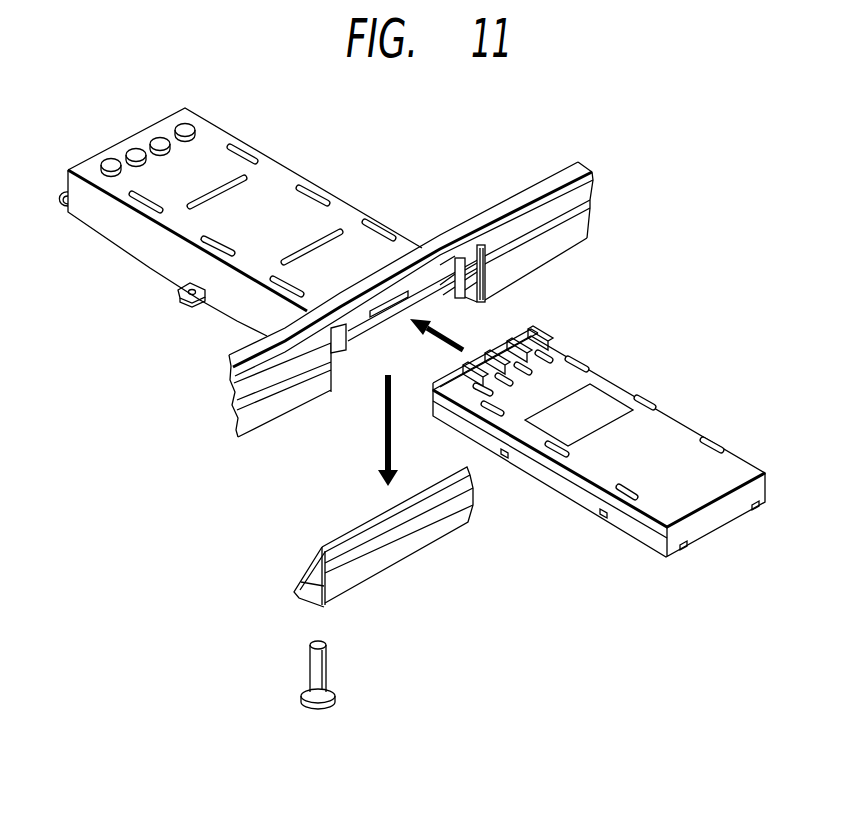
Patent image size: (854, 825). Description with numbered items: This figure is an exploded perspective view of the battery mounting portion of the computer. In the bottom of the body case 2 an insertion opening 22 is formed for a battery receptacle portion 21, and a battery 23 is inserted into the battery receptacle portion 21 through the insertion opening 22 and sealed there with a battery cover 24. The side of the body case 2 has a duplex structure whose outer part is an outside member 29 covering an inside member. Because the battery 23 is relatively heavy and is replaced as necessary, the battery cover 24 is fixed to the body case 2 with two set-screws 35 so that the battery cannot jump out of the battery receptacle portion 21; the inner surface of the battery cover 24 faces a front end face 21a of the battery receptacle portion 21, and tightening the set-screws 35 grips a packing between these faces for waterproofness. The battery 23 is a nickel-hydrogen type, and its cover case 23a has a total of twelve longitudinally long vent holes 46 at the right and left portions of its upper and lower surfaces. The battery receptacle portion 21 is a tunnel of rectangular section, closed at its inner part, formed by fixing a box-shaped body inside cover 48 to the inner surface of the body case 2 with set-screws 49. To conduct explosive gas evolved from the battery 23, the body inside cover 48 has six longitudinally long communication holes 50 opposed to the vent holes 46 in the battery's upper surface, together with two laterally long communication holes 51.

The body case 2 is at (447, 284).
The battery receptacle portion 21 is at (395, 307).
The front end face 21a is at (440, 278).
The insertion opening 22 is at (373, 323).
The battery 23 is at (613, 451).
The cover case 23a is at (692, 507).
The battery cover 24 is at (405, 553).
The outside member 29 is at (567, 227).
The set-screws 35 is at (327, 667).
The vent holes 46 is at (647, 397).
The body inside cover 48 is at (206, 140).
The set-screws 49 is at (180, 302).
The communication holes 50 is at (312, 185).
The communication holes 51 is at (335, 234).